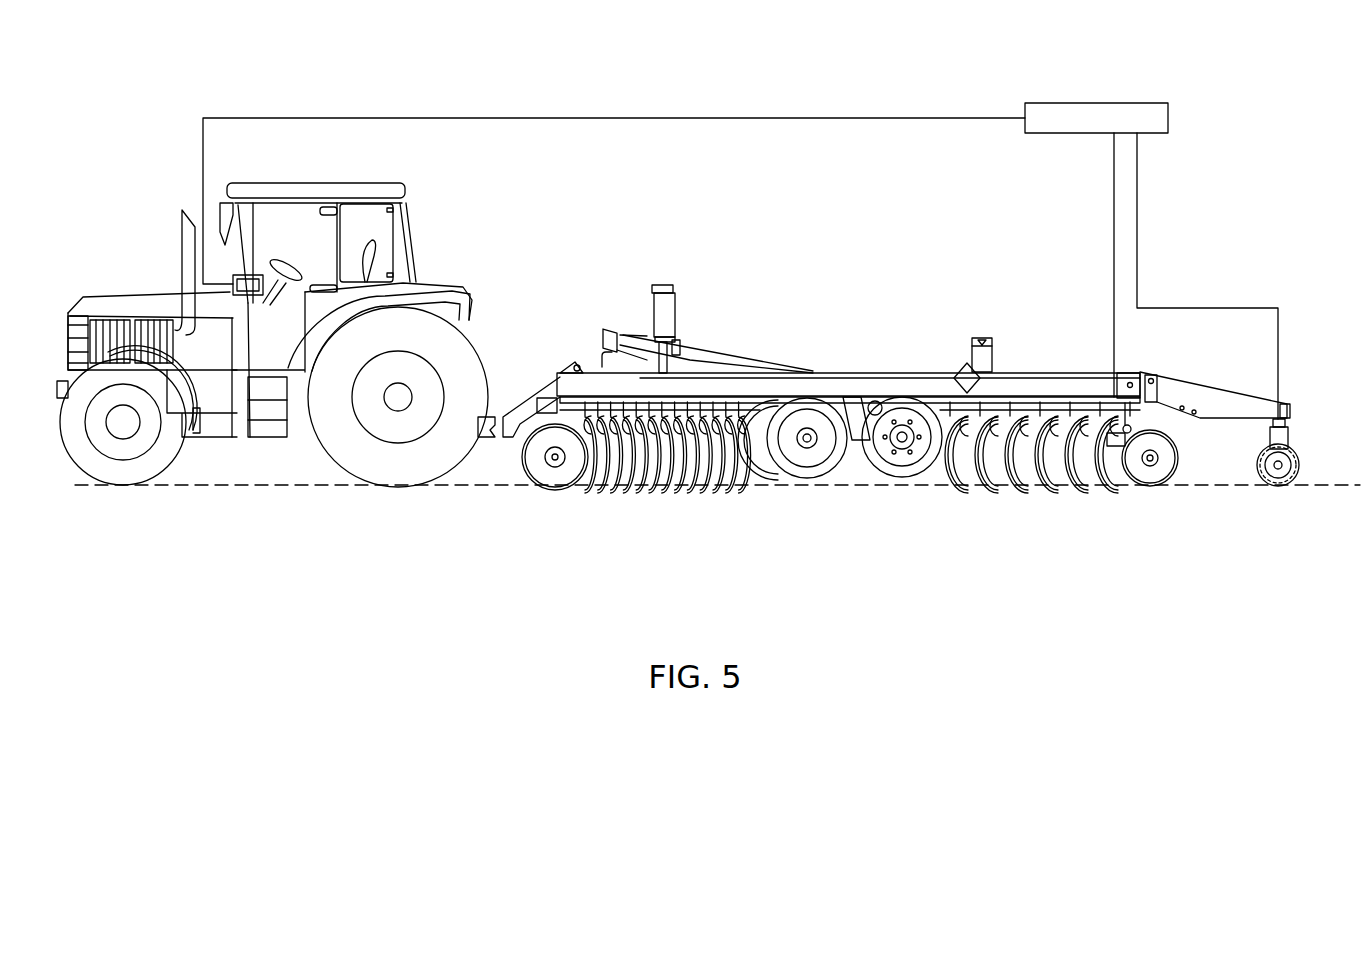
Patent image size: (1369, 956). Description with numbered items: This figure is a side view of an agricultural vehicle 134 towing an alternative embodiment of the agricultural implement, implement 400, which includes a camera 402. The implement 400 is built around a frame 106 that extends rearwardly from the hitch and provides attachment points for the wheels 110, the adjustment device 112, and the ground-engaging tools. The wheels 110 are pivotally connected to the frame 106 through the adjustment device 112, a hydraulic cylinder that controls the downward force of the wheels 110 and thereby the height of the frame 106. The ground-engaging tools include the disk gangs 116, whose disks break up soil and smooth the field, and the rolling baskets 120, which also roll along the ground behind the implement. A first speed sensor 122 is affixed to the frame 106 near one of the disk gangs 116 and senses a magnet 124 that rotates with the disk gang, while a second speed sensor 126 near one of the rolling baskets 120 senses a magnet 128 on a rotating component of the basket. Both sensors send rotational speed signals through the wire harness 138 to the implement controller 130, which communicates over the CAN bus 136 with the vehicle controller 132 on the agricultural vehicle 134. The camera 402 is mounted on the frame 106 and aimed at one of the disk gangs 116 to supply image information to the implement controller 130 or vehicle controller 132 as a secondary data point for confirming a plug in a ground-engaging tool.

The frame 106 is at (857, 360).
The wheels 110 is at (805, 480).
The adjustment device 112 is at (868, 480).
The disk gangs 116 is at (592, 520).
The rolling baskets 120 is at (1308, 468).
The first speed sensor 122 is at (1078, 470).
The magnet 124 is at (1125, 447).
The second speed sensor 126 is at (1277, 470).
The magnet 128 is at (1258, 462).
The implement controller 130 is at (1035, 133).
The vehicle controller 132 is at (270, 256).
The agricultural vehicle 134 is at (130, 223).
The CAN bus 136 is at (760, 120).
The wire harness 138 is at (1113, 250).
The implement 400 is at (547, 268).
The camera 402 is at (965, 363).